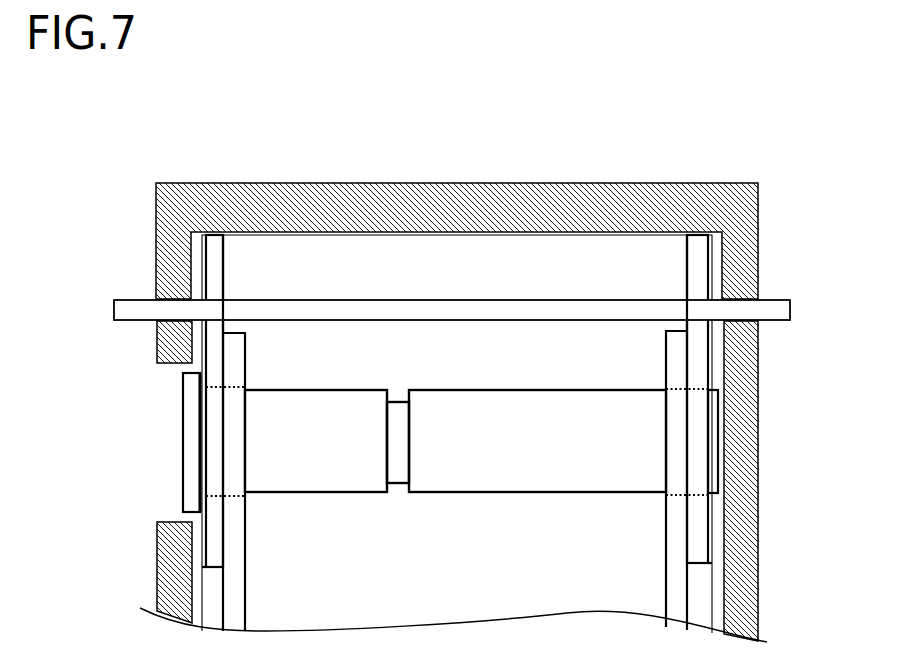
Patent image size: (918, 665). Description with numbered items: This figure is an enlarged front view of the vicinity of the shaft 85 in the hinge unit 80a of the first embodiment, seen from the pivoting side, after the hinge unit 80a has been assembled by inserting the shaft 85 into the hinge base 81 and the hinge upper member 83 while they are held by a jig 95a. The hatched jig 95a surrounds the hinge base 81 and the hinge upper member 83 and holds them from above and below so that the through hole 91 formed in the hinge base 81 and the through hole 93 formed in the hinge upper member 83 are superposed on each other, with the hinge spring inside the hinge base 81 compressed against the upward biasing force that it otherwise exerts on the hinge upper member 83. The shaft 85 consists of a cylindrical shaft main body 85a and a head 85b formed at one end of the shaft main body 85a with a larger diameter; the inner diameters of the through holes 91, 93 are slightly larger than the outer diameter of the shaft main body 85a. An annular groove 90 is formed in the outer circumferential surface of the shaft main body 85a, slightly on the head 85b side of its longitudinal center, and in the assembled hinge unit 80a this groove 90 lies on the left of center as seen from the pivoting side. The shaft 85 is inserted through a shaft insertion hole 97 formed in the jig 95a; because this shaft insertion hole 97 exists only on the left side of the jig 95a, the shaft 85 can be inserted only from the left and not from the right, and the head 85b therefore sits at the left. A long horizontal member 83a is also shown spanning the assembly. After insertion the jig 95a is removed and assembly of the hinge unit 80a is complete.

The hinge unit 80a is at (514, 405).
The hinge base 81 is at (675, 598).
The hinge upper member 83 is at (605, 250).
The shaft 83a is at (148, 300).
The shaft 85 is at (455, 457).
The shaft main body 85a is at (518, 483).
The head 85b is at (182, 458).
The groove 90 is at (400, 488).
The through hole 91 is at (233, 387).
The through hole 93 is at (233, 497).
The jig 95a is at (352, 183).
The shaft insertion hole 97 is at (157, 402).